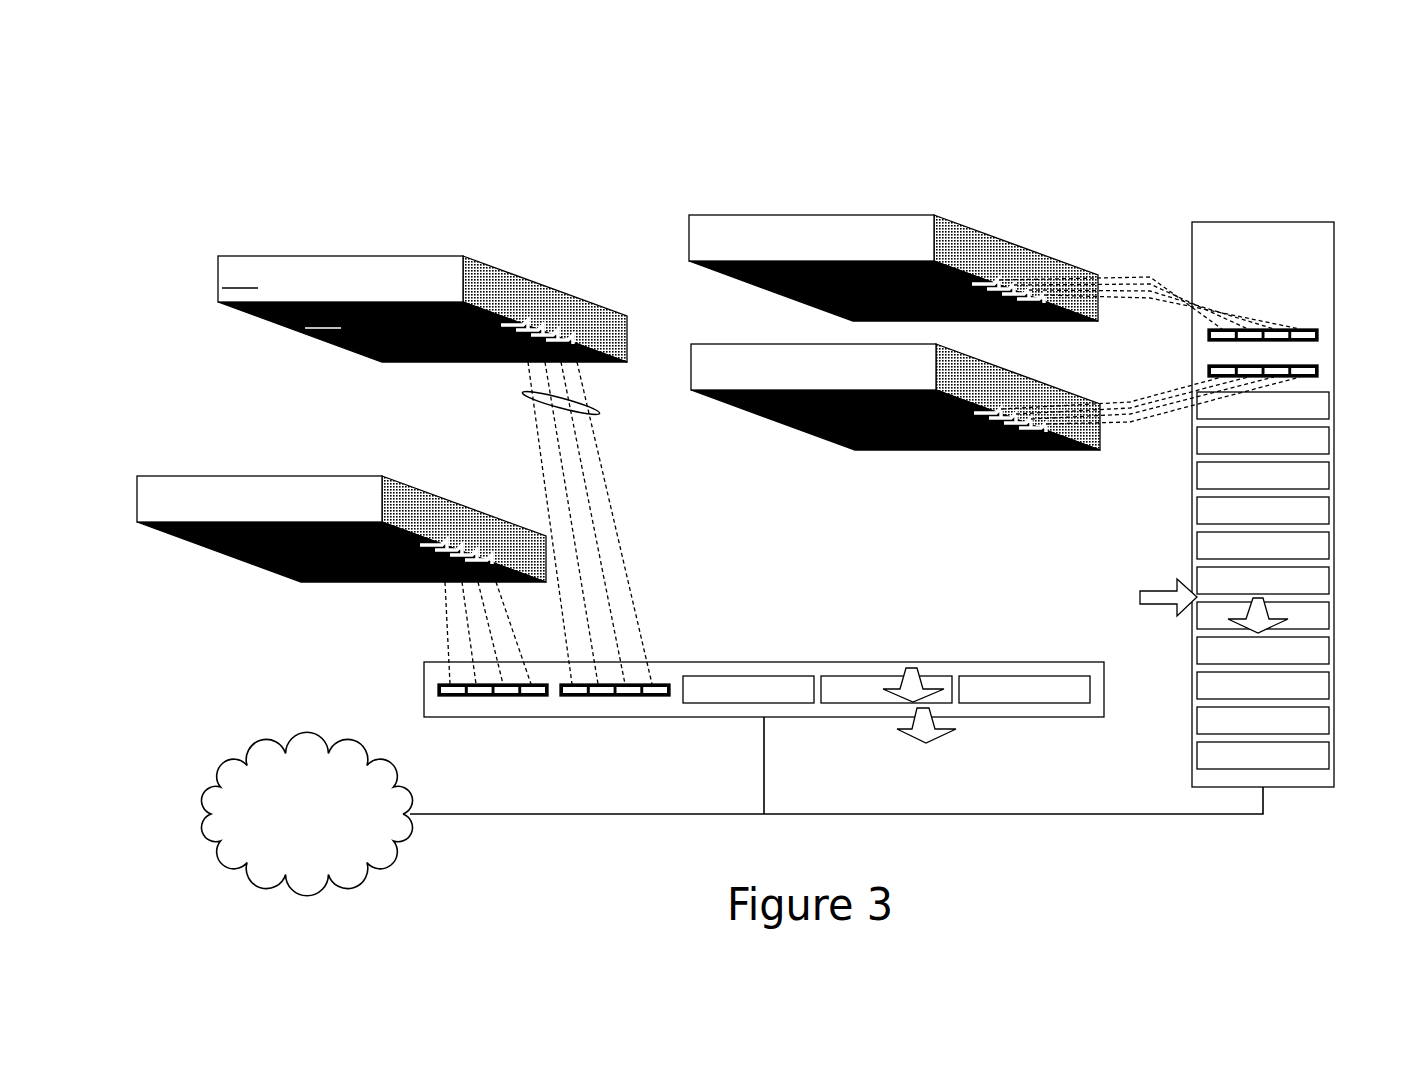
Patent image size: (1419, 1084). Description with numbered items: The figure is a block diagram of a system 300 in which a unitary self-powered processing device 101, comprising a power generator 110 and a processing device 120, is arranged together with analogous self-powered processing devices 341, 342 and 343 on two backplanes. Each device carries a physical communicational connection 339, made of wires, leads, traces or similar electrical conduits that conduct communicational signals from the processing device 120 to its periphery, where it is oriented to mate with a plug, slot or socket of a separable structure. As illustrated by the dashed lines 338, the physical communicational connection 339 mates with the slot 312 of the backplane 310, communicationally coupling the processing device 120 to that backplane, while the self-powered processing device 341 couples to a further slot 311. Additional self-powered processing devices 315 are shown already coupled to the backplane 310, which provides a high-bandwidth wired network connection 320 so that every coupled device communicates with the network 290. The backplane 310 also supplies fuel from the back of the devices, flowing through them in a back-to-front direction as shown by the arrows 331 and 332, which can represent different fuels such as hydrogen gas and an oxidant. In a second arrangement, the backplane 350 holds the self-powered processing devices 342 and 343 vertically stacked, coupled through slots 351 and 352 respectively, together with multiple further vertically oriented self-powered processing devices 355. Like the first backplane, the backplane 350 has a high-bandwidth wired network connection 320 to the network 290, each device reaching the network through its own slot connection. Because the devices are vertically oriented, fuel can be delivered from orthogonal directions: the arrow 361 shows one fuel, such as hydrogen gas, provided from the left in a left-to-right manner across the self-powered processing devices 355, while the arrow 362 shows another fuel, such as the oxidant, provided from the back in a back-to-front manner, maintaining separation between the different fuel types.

The system 300 is at (258, 92).
The self-powered processing device 101 is at (422, 278).
The power generator 110 is at (339, 277).
The processing device 120 is at (388, 328).
The physical communicational connection 339 is at (537, 315).
The dashed lines 338 is at (630, 406).
The self-powered processing device 341 is at (263, 458).
The self-powered processing device 342 is at (860, 198).
The self-powered processing device 343 is at (899, 468).
The backplane 350 is at (1257, 482).
The slot 351 is at (1312, 328).
The slot 352 is at (1309, 365).
The self-powered processing devices 355 is at (1345, 390).
The arrow 361 is at (1163, 592).
The arrow 362 is at (1253, 622).
The backplane 310 is at (707, 694).
The slot 311 is at (507, 697).
The slot 312 is at (586, 697).
The self-powered processing devices 315 is at (1090, 648).
The arrow 331 is at (895, 690).
The arrow 332 is at (935, 731).
The high-bandwidth wired network connection 320 is at (490, 815).
The network 290 is at (287, 857).